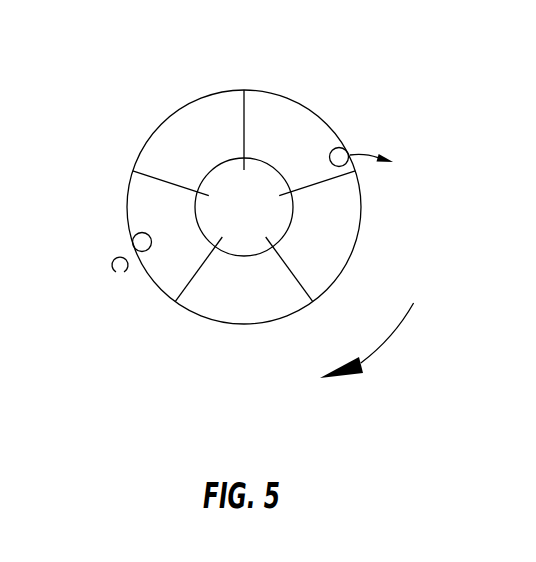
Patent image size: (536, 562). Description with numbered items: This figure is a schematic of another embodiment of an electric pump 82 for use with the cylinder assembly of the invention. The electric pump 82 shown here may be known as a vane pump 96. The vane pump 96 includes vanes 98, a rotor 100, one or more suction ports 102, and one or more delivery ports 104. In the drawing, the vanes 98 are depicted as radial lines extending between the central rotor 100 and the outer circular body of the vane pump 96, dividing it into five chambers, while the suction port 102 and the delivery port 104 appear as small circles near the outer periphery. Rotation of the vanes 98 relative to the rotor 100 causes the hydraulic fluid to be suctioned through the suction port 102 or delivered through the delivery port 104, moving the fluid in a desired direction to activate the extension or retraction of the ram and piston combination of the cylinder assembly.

The electric pump 82 is at (178, 78).
The vane pump 96 is at (290, 94).
The vanes 98 is at (330, 180).
The rotor 100 is at (163, 142).
The suction port 102 is at (135, 237).
The delivery port 104 is at (345, 150).